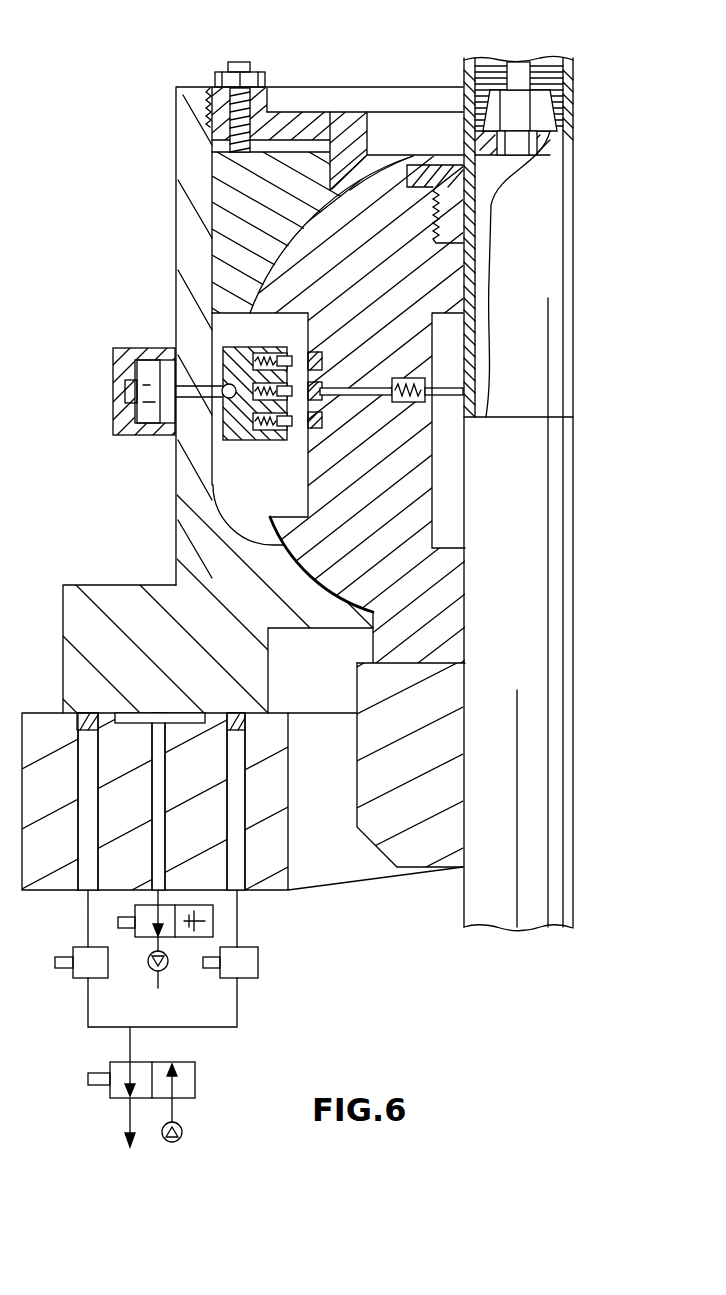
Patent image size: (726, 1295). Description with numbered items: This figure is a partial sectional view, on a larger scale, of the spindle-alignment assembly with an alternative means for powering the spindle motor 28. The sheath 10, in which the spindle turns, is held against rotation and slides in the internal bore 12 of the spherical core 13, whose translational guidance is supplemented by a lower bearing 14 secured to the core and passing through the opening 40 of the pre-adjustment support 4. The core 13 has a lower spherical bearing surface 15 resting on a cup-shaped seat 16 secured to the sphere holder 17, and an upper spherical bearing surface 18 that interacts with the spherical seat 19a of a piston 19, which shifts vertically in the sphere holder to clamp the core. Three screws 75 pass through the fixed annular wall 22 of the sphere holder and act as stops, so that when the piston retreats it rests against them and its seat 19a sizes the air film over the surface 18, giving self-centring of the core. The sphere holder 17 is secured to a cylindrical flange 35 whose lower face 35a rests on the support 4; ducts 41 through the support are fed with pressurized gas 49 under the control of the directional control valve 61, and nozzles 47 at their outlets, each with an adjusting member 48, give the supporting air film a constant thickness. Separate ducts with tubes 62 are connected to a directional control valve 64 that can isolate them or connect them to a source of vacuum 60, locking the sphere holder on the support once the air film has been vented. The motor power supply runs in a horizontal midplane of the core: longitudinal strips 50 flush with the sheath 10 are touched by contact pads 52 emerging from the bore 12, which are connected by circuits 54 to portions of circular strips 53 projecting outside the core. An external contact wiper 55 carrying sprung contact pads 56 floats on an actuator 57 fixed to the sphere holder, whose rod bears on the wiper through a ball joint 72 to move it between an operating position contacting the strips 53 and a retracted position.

The pre-adjustment support 4 is at (85, 886).
The sheath 10 is at (495, 855).
The internal bore 12 is at (466, 566).
The spherical core 13 is at (405, 577).
The lower bearing 14 is at (417, 835).
The lower spherical bearing surface 15 is at (310, 574).
The seat 16 is at (334, 580).
The sphere holder 17 is at (192, 233).
The upper spherical bearing surface 18 is at (346, 178).
The piston 19 is at (242, 197).
The spherical seat 19a is at (321, 222).
The fixed annular wall 22 is at (312, 128).
The electric motor 28 is at (544, 72).
The cylindrical flange 35 is at (117, 610).
The lower face 35a is at (130, 720).
The opening 40 is at (288, 857).
The ducts 41 is at (237, 800).
The nozzles 47 is at (97, 712).
The adjusting member 48 is at (259, 968).
The pressurized gas 49 is at (183, 1132).
The longitudinal strips 50 is at (468, 274).
The contact pads 52 is at (447, 398).
The circular strips 53 is at (304, 350).
The circuits 54 is at (358, 398).
The contact wiper 55 is at (229, 345).
The sprung contact pads 56 is at (296, 422).
The actuator 57 is at (113, 422).
The source of vacuum 60 is at (150, 957).
The directional control valve 61 is at (196, 1063).
The tubes 62 is at (157, 758).
The directional control valve 64 is at (213, 921).
The ball joint 72 is at (228, 442).
The screws 75 is at (230, 66).